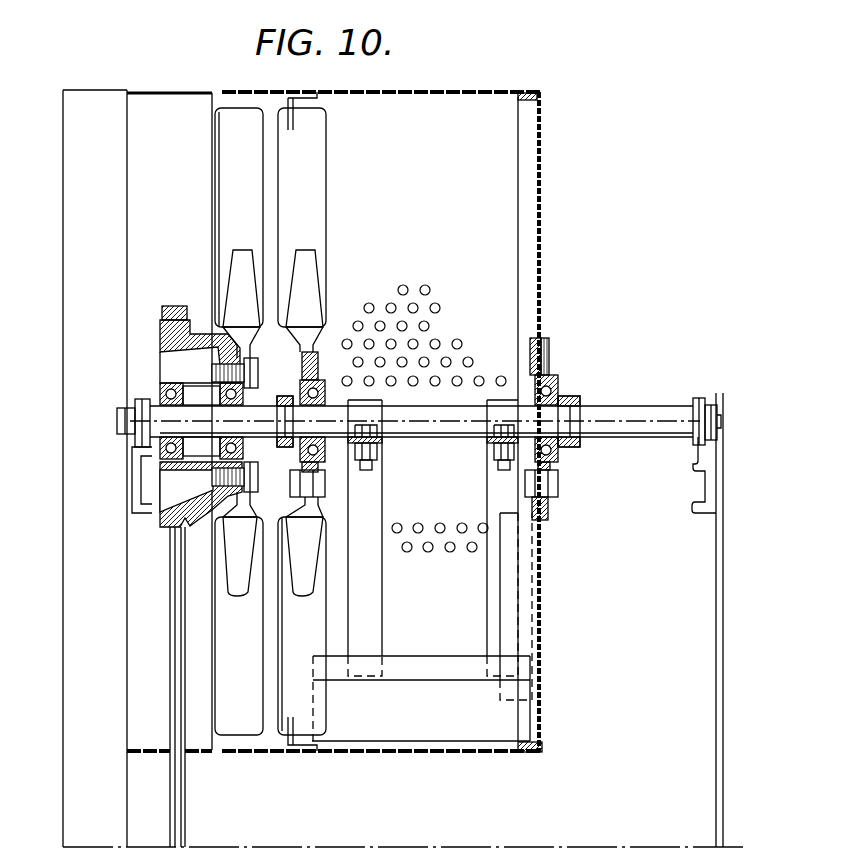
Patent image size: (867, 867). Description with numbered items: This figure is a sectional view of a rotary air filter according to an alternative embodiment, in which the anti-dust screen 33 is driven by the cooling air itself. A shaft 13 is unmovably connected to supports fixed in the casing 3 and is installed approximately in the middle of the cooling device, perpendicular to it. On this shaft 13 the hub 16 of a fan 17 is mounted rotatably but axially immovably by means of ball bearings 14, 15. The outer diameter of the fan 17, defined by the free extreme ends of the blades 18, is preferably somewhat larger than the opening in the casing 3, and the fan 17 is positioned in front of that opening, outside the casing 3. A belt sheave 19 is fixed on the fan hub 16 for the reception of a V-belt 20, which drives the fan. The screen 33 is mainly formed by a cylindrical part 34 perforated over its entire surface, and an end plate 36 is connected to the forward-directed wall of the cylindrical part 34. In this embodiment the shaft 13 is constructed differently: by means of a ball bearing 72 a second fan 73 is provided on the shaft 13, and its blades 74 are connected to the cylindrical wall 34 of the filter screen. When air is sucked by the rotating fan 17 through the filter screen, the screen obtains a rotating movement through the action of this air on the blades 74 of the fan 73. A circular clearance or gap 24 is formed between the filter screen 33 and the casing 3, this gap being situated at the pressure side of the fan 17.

The casing 3 is at (167, 92).
The shaft 13 is at (630, 415).
The ball bearing 14 is at (305, 181).
The ball bearing 15 is at (163, 470).
The hub 16 is at (190, 380).
The fan 17 is at (216, 157).
The blades 18 is at (235, 185).
The belt sheave 19 is at (173, 508).
The V-belt 20 is at (175, 566).
The circular clearance or gap 24 is at (219, 66).
The screen 33 is at (490, 91).
The cylindrical part 34 is at (492, 92).
The end plate 36 is at (541, 237).
The ball bearing 72 is at (320, 375).
The fan 73 is at (337, 144).
The blades 74 is at (310, 615).